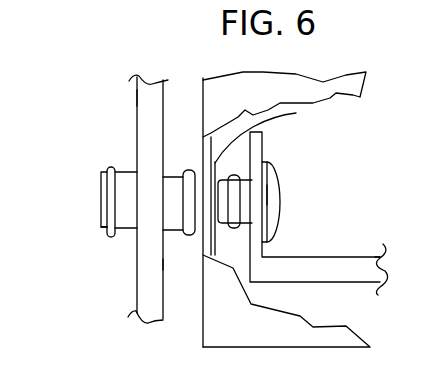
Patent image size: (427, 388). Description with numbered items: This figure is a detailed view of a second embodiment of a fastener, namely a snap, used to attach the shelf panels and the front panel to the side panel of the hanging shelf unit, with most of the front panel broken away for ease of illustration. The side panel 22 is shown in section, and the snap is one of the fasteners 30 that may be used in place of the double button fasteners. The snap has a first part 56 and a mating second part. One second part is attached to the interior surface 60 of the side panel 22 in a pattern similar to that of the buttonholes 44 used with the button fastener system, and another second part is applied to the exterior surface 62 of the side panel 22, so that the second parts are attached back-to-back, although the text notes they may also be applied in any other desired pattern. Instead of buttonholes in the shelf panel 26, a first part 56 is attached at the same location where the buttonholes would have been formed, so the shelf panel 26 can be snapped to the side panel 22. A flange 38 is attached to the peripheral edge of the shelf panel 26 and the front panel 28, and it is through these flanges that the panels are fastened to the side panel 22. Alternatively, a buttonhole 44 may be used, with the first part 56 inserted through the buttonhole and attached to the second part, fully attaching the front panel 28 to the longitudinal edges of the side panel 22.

The side panel 22 is at (150, 284).
The shelf panel 26 is at (326, 256).
The front panel 28 is at (291, 360).
The fasteners 30 is at (401, 255).
The flange 38 is at (296, 113).
The button holes 44 is at (204, 158).
The first part 56 is at (276, 167).
The interior surface 60 is at (163, 259).
The exterior surface 62 is at (137, 98).